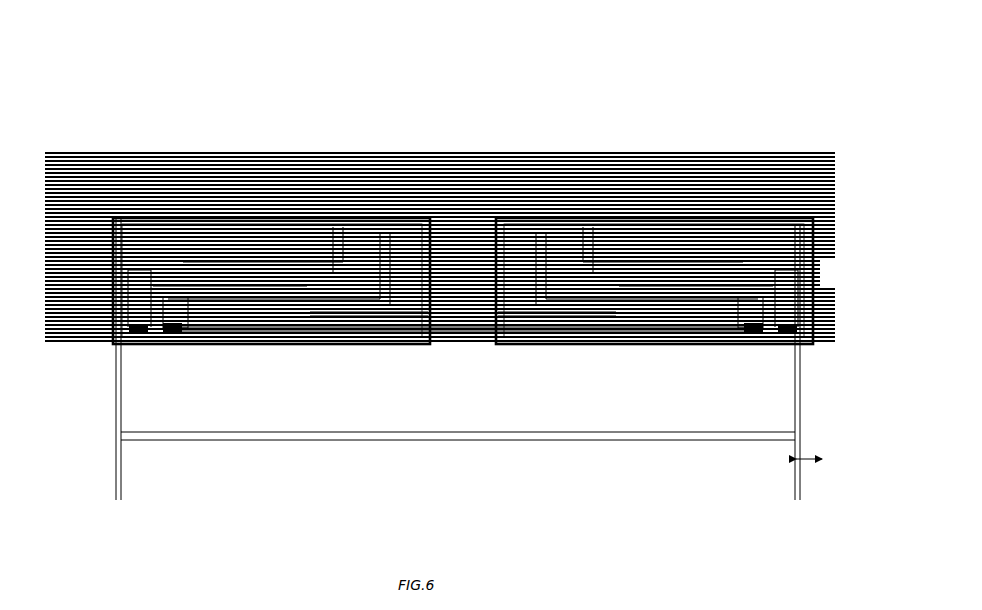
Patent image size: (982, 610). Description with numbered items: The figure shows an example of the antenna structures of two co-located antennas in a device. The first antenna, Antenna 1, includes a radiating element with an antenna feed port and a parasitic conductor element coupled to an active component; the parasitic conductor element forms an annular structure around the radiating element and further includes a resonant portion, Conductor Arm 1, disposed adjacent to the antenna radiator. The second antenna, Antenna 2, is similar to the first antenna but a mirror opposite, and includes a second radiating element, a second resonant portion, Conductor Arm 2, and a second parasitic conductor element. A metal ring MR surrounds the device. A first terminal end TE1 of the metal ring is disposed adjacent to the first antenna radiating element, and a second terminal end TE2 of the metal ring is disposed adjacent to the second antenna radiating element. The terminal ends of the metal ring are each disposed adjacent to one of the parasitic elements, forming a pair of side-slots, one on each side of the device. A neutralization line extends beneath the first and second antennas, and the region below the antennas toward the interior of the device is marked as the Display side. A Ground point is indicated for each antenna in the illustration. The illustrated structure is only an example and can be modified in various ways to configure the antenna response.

The first antenna Antenna 1 is at (271, 272).
The second antenna Antenna 2 is at (654, 272).
The resonant portion Conductor Arm 1 is at (203, 267).
The second resonant portion Conductor Arm 2 is at (579, 244).
The ground point Ground point is at (491, 313).
The first terminal end TE1 is at (112, 325).
The second terminal end TE2 is at (803, 314).
The display side Display side is at (458, 454).
The metal ring MR is at (122, 465).